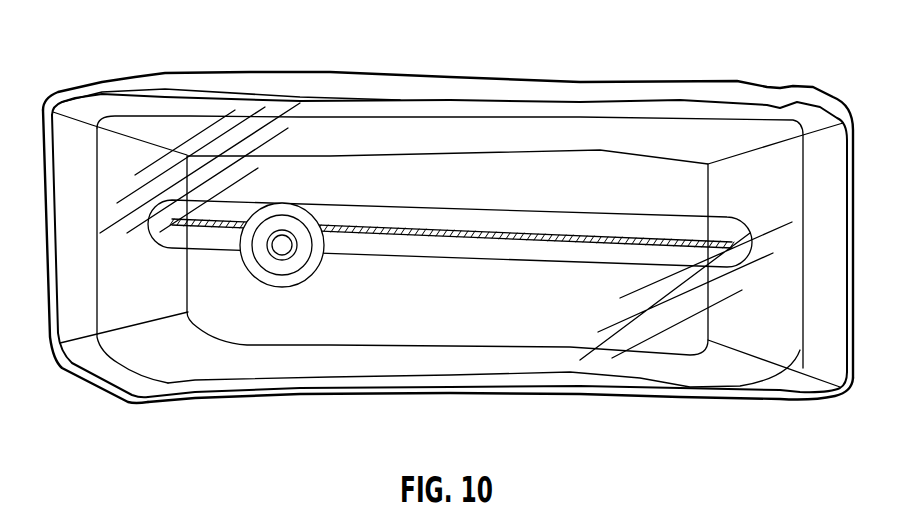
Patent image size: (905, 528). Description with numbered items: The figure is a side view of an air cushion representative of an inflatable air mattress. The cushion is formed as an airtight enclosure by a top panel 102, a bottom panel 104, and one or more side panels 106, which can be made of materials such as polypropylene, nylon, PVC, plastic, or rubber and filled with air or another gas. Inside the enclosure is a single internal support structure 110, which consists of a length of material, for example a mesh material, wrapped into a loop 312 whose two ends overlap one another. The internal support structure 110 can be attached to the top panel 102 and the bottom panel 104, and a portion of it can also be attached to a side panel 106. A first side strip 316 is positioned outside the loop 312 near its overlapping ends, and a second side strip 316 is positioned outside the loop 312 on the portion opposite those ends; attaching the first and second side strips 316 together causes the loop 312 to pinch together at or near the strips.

The top panel 102 is at (688, 88).
The bottom panel 104 is at (567, 400).
The side panel 106 is at (62, 323).
The internal support structure 110 is at (212, 280).
The loop 312 is at (347, 320).
The side strip 316 is at (633, 228).